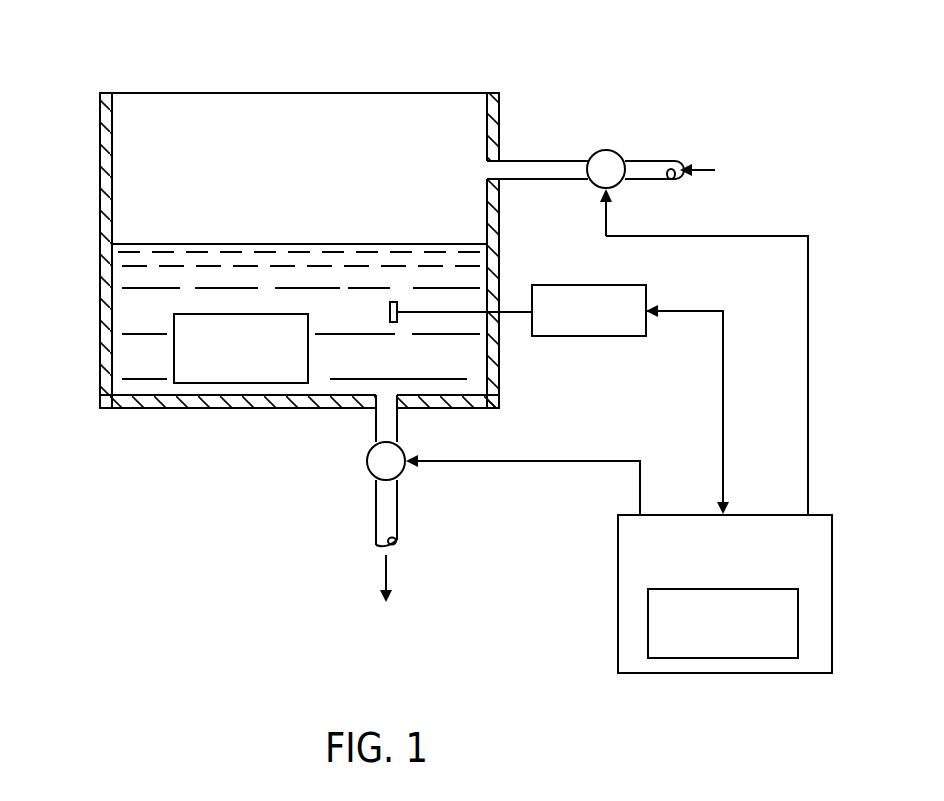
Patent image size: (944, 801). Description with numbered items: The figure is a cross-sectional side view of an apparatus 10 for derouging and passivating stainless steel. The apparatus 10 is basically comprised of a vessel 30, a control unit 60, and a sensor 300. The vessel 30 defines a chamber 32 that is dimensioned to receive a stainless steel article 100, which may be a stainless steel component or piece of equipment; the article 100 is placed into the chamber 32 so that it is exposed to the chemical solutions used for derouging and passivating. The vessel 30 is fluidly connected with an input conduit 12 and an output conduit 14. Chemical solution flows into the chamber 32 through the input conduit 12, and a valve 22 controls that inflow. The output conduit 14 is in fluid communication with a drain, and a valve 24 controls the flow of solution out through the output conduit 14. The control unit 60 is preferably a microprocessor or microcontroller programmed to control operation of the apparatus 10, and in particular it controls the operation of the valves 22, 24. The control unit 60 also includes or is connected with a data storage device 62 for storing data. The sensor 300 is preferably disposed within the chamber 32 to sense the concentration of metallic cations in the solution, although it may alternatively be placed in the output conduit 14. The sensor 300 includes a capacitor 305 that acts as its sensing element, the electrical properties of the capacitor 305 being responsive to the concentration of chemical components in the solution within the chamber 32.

The apparatus 10 is at (616, 59).
The vessel 30 is at (99, 124).
The chamber 32 is at (143, 183).
The stainless steel article 100 is at (215, 370).
The capacitor 305 is at (400, 303).
The sensor 300 is at (599, 350).
The input conduit 12 is at (534, 159).
The valve 22 is at (615, 150).
The output conduit 14 is at (375, 428).
The valve 24 is at (365, 468).
The control unit 60 is at (617, 572).
The data storage device 62 is at (710, 660).